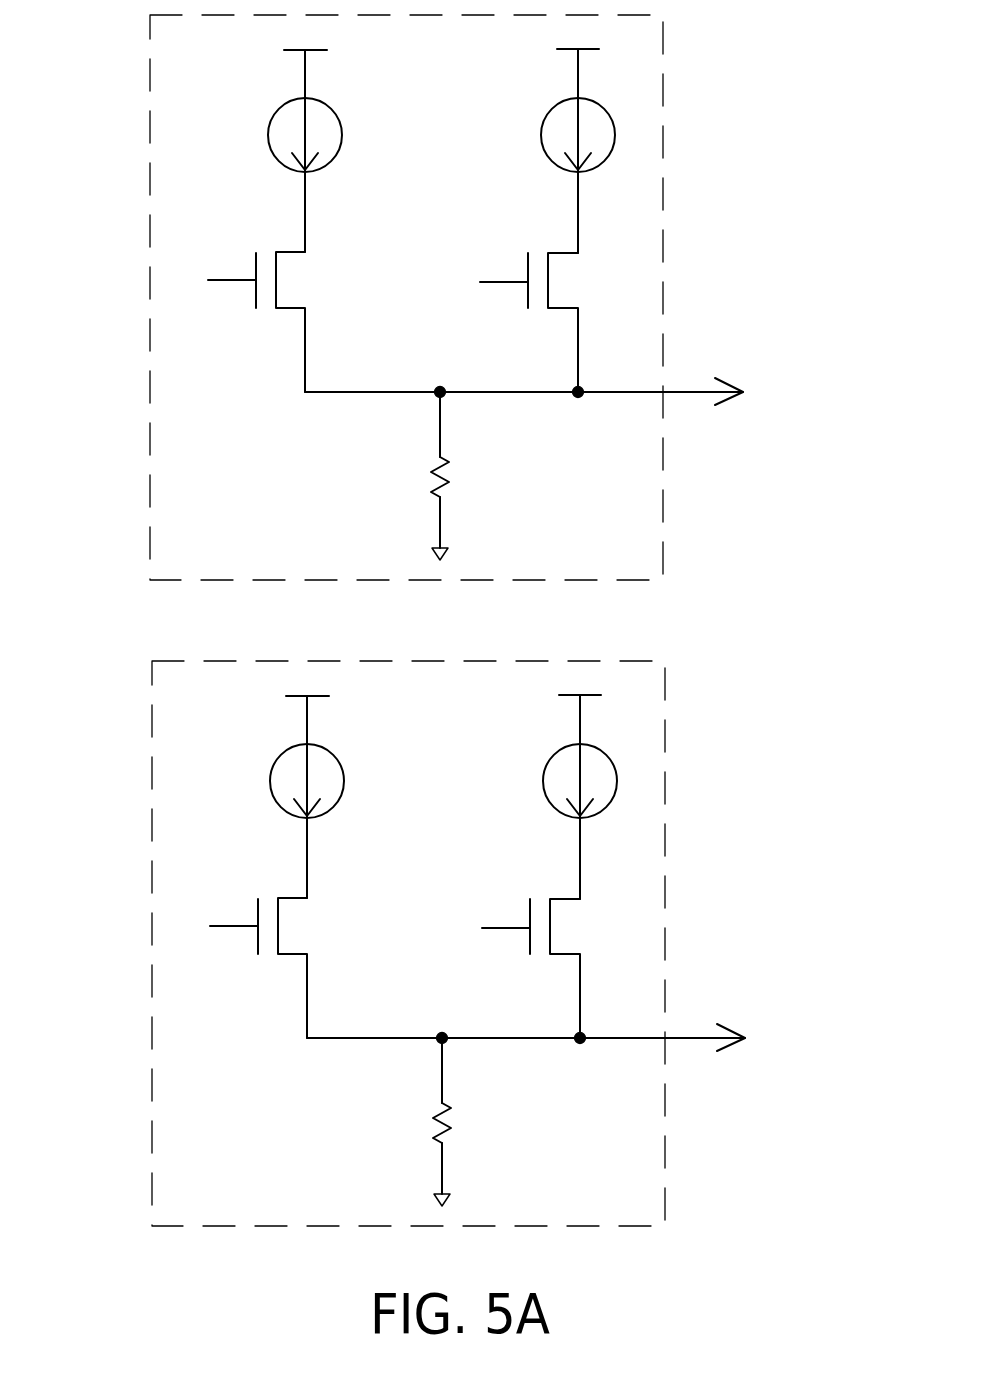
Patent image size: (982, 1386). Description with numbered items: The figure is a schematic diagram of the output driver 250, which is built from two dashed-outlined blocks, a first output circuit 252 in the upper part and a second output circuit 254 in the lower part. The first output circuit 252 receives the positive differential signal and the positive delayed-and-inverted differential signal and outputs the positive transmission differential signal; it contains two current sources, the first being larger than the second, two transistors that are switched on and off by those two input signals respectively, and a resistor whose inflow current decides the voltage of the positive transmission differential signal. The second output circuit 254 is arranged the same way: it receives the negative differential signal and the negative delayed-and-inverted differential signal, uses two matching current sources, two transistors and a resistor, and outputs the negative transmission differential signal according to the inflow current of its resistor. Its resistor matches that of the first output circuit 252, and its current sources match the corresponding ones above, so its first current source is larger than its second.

The output driver 250 is at (98, 27).
The first output circuit 252 is at (663, 80).
The second output circuit 254 is at (664, 729).